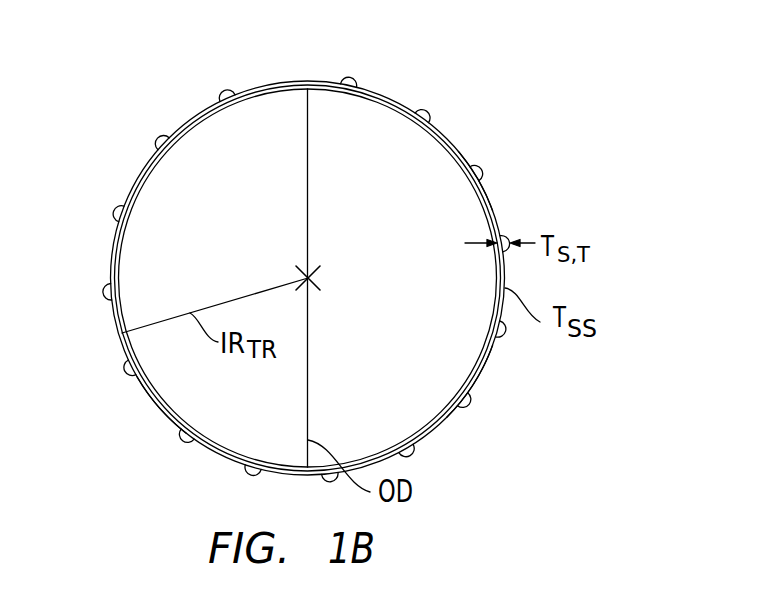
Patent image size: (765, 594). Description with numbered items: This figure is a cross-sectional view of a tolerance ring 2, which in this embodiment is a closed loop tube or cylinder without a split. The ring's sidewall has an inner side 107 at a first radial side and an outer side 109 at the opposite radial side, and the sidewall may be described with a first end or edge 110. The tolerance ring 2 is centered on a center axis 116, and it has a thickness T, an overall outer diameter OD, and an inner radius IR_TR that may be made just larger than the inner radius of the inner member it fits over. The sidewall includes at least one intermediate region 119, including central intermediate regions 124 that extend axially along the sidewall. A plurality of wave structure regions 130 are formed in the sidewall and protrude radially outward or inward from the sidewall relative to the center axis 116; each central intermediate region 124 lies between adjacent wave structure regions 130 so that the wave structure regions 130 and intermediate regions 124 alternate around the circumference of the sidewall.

The tolerance ring 2 is at (573, 43).
The inner side 107 is at (128, 265).
The outer side 109 is at (150, 407).
The first end or edge 110 is at (245, 93).
The center axis 116 is at (308, 278).
The intermediate region 119 is at (490, 362).
The central intermediate region 124 is at (457, 142).
The wave structure region 130 is at (150, 150).